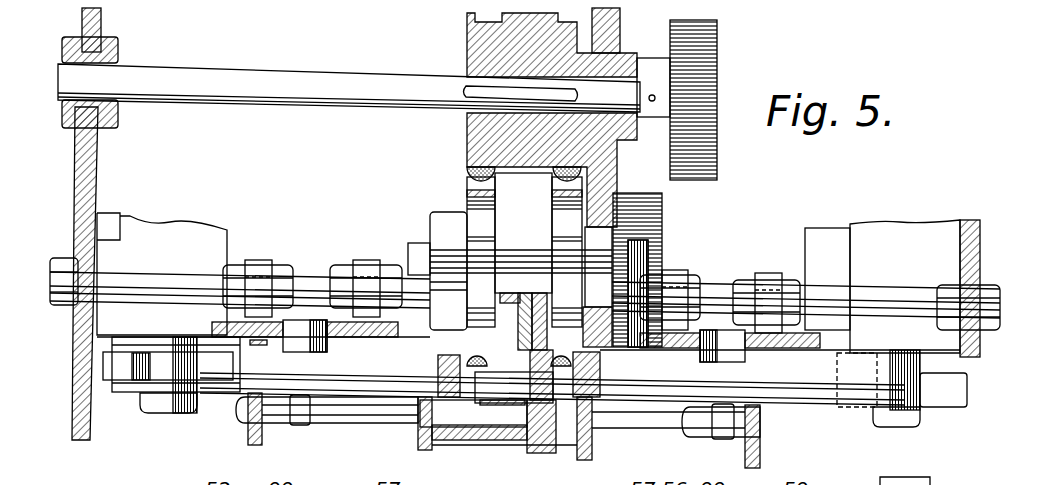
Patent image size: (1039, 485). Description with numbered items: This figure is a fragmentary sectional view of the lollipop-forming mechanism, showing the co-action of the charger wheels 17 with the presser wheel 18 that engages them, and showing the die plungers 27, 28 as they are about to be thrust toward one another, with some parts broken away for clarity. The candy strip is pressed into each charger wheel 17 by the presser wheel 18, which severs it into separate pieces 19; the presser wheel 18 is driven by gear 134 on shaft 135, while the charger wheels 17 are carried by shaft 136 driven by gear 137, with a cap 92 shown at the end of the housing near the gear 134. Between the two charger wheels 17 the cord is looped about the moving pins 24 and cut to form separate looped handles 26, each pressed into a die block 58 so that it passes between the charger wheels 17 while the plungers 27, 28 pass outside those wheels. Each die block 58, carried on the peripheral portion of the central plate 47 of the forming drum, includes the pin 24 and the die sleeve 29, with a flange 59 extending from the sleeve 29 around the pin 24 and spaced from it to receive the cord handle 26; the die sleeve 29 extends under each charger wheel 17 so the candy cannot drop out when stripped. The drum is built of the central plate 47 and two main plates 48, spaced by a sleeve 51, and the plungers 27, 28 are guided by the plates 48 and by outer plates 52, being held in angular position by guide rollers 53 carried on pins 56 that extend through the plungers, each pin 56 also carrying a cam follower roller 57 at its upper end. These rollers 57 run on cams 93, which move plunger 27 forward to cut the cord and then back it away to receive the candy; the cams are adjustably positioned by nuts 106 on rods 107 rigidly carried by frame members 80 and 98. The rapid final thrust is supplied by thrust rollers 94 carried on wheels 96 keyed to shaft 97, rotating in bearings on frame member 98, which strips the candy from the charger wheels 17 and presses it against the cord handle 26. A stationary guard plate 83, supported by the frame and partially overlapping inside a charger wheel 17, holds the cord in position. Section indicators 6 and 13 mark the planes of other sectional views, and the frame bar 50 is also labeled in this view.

The section line 6- 6 is at (27, 302).
The section line 13- 13 is at (306, 296).
The charger wheel 17 is at (468, 200).
The presser wheel 18 is at (468, 122).
The separate pieces 19 is at (470, 165).
The pin 24 is at (502, 292).
The looped handle 26 is at (511, 352).
The die plunger 27 is at (404, 360).
The die plunger 28 is at (812, 395).
The die sleeve 29 is at (507, 427).
The central plate 47 is at (541, 426).
The main plate 48 is at (418, 437).
The frame bar 50 is at (392, 432).
The sleeve 51 is at (432, 448).
The outer plate 52 is at (248, 432).
The guide roller 53 is at (290, 422).
The pin 56 is at (290, 322).
The cam follower roller 57 is at (330, 326).
The die block 58 is at (485, 408).
The flange 59 is at (512, 298).
The frame member 80 is at (76, 385).
The guard plate 83 is at (493, 331).
The cap 92 is at (618, 28).
The cam 93 is at (214, 330).
The thrust roller 94 is at (133, 388).
The wheel 96 is at (962, 408).
The shaft 97 is at (175, 413).
The frame member 98 is at (981, 233).
The nut 106 is at (278, 268).
The rod 107 is at (160, 276).
The gear 134 is at (718, 32).
The shaft 135 is at (312, 100).
The shaft 136 is at (730, 252).
The gear 137 is at (662, 212).